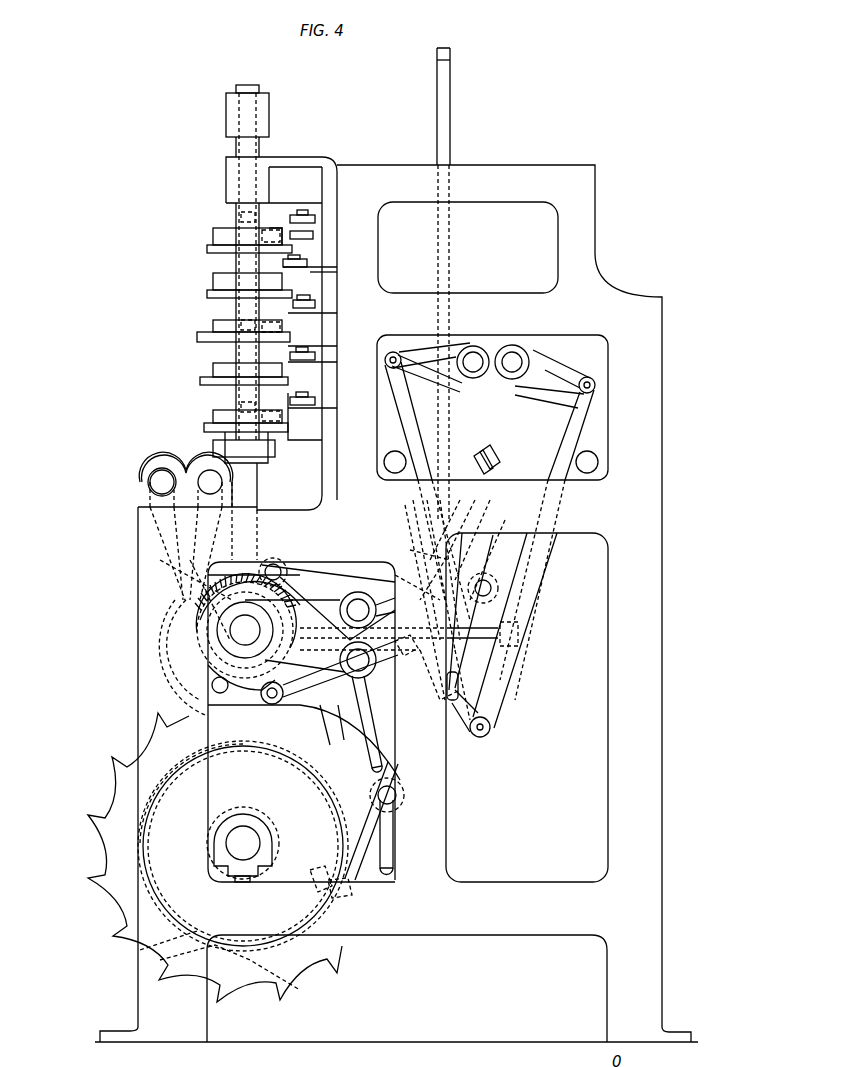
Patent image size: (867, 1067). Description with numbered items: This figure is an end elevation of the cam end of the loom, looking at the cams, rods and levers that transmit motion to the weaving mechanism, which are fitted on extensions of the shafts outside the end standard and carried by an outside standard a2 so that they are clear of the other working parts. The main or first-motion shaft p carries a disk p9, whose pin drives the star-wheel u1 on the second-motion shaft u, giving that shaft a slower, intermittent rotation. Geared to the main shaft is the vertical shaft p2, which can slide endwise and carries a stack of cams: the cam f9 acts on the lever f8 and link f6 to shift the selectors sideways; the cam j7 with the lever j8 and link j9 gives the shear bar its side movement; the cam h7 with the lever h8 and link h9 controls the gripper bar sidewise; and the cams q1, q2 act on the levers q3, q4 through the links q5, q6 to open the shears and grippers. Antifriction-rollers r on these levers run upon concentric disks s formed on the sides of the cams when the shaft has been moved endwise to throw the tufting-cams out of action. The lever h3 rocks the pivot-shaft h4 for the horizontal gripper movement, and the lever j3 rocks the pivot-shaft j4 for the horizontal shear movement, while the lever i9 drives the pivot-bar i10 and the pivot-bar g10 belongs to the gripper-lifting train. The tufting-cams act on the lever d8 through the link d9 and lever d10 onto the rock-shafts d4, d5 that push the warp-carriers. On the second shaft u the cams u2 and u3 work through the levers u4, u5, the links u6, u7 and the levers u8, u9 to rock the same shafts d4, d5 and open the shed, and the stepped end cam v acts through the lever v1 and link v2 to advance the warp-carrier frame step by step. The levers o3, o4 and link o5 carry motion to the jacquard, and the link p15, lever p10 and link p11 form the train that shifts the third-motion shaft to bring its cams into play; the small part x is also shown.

The outside standard a2 is at (396, 603).
The link o5 is at (446, 110).
The lever f8 is at (268, 225).
The link f6 is at (302, 214).
The cam f9 is at (207, 249).
The antifriction-roller r is at (236, 223).
The concentric disk s is at (272, 326).
The link q6 is at (305, 256).
The lever q4 is at (312, 271).
The cam q2 is at (213, 294).
The link j9 is at (316, 302).
The lever j8 is at (238, 322).
The cam j7 is at (197, 336).
The link q5 is at (310, 346).
The lever q3 is at (316, 347).
The cam q1 is at (200, 381).
The link h9 is at (316, 398).
The cam h7 is at (204, 427).
The lever h8 is at (291, 410).
The pivot-shaft h4 is at (205, 470).
The pivot-shaft j4 is at (148, 482).
The vertical shaft p2 is at (240, 507).
The lever h3 is at (186, 528).
The lever j3 is at (157, 552).
The disk p9 is at (190, 668).
The main rotating shaft p is at (241, 631).
The link p15 is at (290, 566).
The lever i9 is at (310, 625).
The pivot-bar i10 is at (392, 603).
The pivot-bar g10 is at (360, 690).
The lever u4 is at (360, 735).
The lever d8 is at (402, 570).
The stepped end cam v is at (266, 828).
The second-motion shaft u is at (243, 844).
The star-wheel u1 is at (115, 790).
The cam u2 is at (130, 885).
The cam u3 is at (170, 940).
The lever v1 is at (370, 850).
The stop x is at (318, 892).
The link d9 is at (430, 432).
The lever d10 is at (410, 350).
The rock-shaft d4 is at (476, 350).
The rock-shaft d5 is at (516, 348).
The lever u8 is at (425, 380).
The lever u9 is at (535, 395).
The link v2 is at (500, 458).
The link u7 is at (515, 630).
The lever u5 is at (470, 735).
The lever p10 is at (467, 650).
The link p11 is at (518, 634).
The lever o3 is at (440, 722).
The lever o4 is at (462, 685).
The link u6 is at (462, 551).